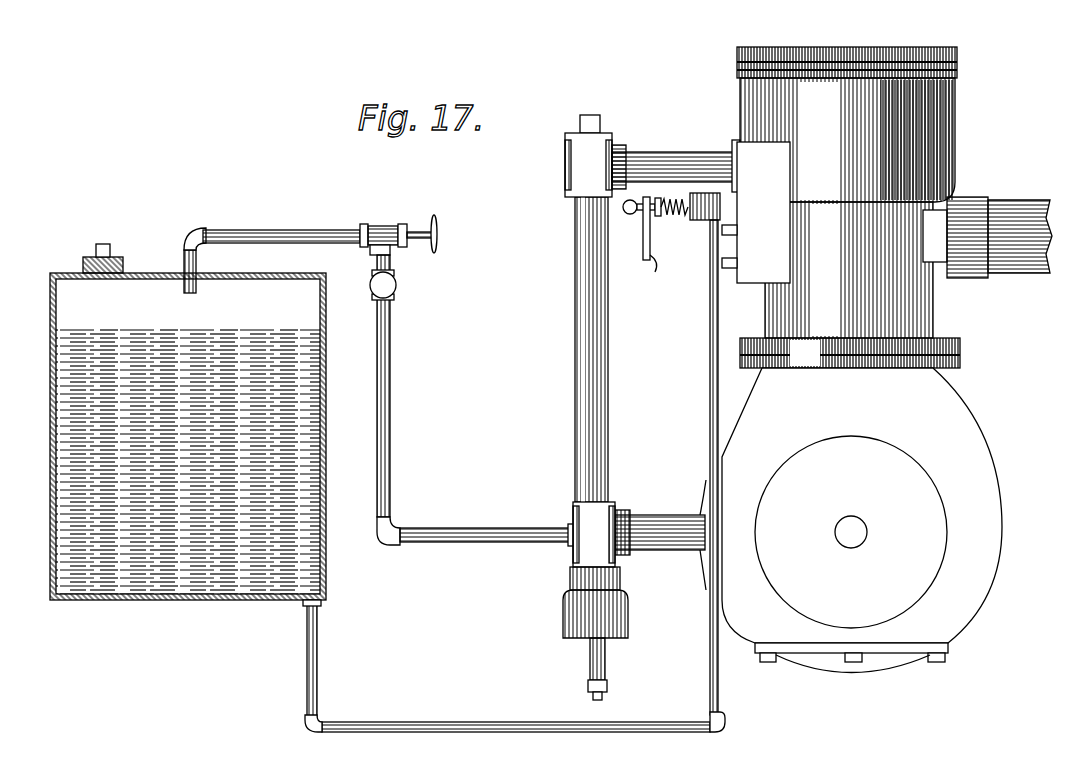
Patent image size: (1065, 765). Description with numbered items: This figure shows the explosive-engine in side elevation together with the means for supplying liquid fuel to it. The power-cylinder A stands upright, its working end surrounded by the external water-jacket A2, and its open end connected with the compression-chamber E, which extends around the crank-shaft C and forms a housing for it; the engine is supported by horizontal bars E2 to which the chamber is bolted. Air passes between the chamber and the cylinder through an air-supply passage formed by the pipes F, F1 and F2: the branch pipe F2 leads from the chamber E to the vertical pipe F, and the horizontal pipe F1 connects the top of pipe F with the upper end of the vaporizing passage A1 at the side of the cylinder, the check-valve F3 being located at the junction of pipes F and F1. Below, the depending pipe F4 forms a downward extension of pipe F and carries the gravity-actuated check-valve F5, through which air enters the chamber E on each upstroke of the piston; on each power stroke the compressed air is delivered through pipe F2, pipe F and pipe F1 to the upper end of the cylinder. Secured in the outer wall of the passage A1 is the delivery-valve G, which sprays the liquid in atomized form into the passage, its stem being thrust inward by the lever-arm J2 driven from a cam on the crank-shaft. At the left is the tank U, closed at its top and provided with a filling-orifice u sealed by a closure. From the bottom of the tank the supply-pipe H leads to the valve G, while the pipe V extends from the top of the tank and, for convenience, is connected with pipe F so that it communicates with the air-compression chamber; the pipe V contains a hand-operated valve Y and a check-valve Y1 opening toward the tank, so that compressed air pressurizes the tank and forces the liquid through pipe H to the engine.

The tank U is at (326, 403).
The filling-orifice u is at (112, 262).
The valve Y is at (410, 230).
The check-valve Y1 is at (396, 286).
The pipe V is at (392, 408).
The pipe F is at (608, 352).
The pipe F1 is at (672, 160).
The branch pipe F2 is at (656, 530).
The check-valve F3 is at (578, 168).
The depending pipe F4 is at (573, 573).
The gravity-actuated check-valve F5 is at (600, 626).
The delivery-valve G is at (712, 208).
The lever-arm J2 is at (648, 262).
The power-cylinder A is at (850, 285).
The vaporizing passage A1 is at (756, 212).
The water-jacket A2 is at (847, 124).
The shaft O is at (987, 237).
The compression-chamber E is at (862, 520).
The horizontal bars E2 is at (851, 532).
The crank-shaft C is at (850, 532).
The supply-pipe H is at (533, 731).